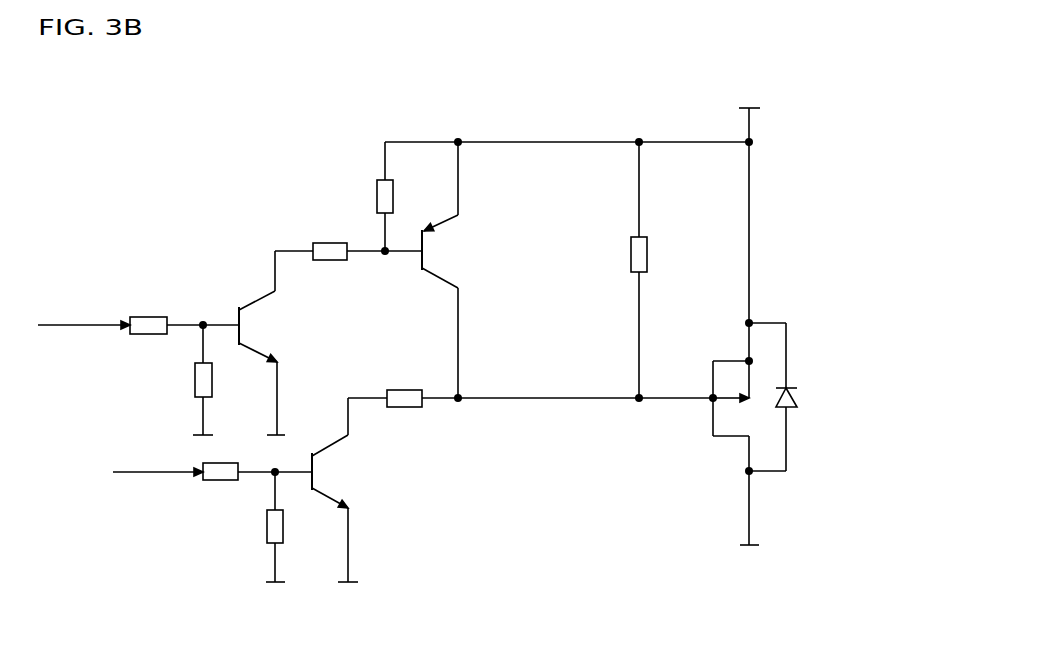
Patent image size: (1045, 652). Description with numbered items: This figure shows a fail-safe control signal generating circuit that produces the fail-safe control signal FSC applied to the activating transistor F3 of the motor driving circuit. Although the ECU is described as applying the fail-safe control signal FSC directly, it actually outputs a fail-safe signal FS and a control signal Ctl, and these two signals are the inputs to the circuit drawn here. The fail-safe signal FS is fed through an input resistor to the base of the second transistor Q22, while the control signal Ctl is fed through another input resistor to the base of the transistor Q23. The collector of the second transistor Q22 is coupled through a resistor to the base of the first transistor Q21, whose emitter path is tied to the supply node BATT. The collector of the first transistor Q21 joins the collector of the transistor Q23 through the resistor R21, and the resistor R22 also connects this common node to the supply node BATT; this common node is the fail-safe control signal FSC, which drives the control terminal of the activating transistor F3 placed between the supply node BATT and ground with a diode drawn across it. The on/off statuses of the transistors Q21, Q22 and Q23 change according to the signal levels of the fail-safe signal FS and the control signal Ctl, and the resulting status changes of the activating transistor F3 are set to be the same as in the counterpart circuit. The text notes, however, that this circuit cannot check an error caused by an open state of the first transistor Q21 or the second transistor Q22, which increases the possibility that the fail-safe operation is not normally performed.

The first transistor Q21 is at (437, 270).
The second transistor Q22 is at (254, 363).
The transistor Q23 is at (346, 490).
The resistor R21 is at (403, 384).
The resistor R22 is at (663, 270).
The activating transistor F3 is at (787, 397).
The fail-safe signal FS is at (125, 364).
The control signal Ctl is at (212, 511).
The battery voltage node BATT is at (744, 110).
The fail-safe control signal FSC is at (700, 413).